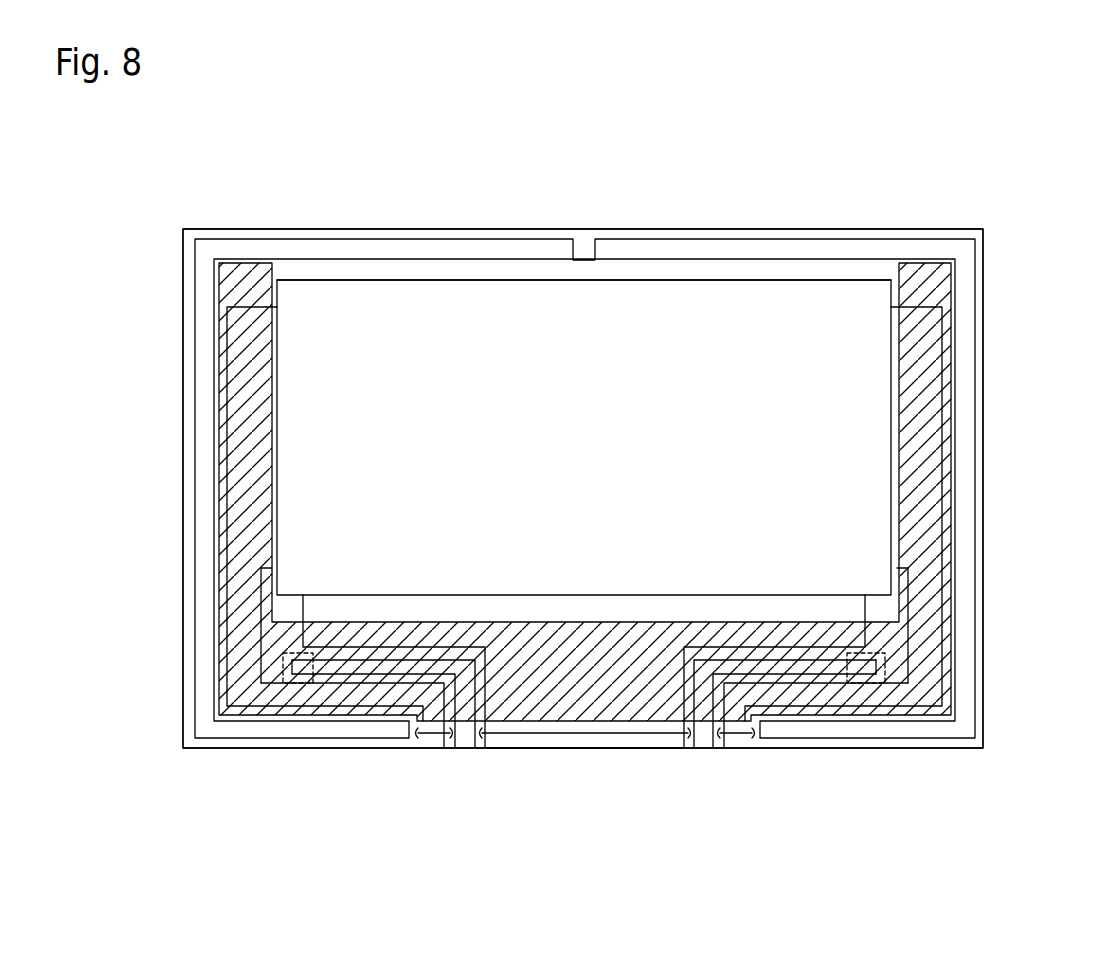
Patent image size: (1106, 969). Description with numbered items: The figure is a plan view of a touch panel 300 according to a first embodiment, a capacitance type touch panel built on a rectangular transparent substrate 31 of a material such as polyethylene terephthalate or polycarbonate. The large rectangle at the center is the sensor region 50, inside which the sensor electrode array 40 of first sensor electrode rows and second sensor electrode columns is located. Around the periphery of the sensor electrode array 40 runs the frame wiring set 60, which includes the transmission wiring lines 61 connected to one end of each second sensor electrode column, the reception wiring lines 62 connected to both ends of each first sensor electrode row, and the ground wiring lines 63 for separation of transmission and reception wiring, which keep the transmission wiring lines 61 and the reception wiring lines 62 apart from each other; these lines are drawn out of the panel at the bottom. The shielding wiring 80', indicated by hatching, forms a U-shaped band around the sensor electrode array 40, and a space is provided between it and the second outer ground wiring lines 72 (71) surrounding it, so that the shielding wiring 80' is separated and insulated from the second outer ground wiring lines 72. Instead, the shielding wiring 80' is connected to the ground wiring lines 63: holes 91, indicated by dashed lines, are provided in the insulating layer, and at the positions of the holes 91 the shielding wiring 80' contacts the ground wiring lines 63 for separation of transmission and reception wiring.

The touch panel 300 is at (207, 226).
The transparent substrate 31 is at (985, 687).
The second outer ground wiring lines 72 is at (580, 488).
The frame 71 is at (205, 352).
The shielding wiring 80' is at (585, 443).
The sensor electrode array 40 is at (760, 322).
The sensor region 50 is at (438, 280).
The frame wiring set 60 is at (584, 736).
The transmission wiring lines 61 is at (585, 783).
The reception wiring lines 62 is at (433, 749).
The ground wiring lines for separation of transmission and reception wiring 63 is at (467, 749).
The holes 91 is at (273, 685).